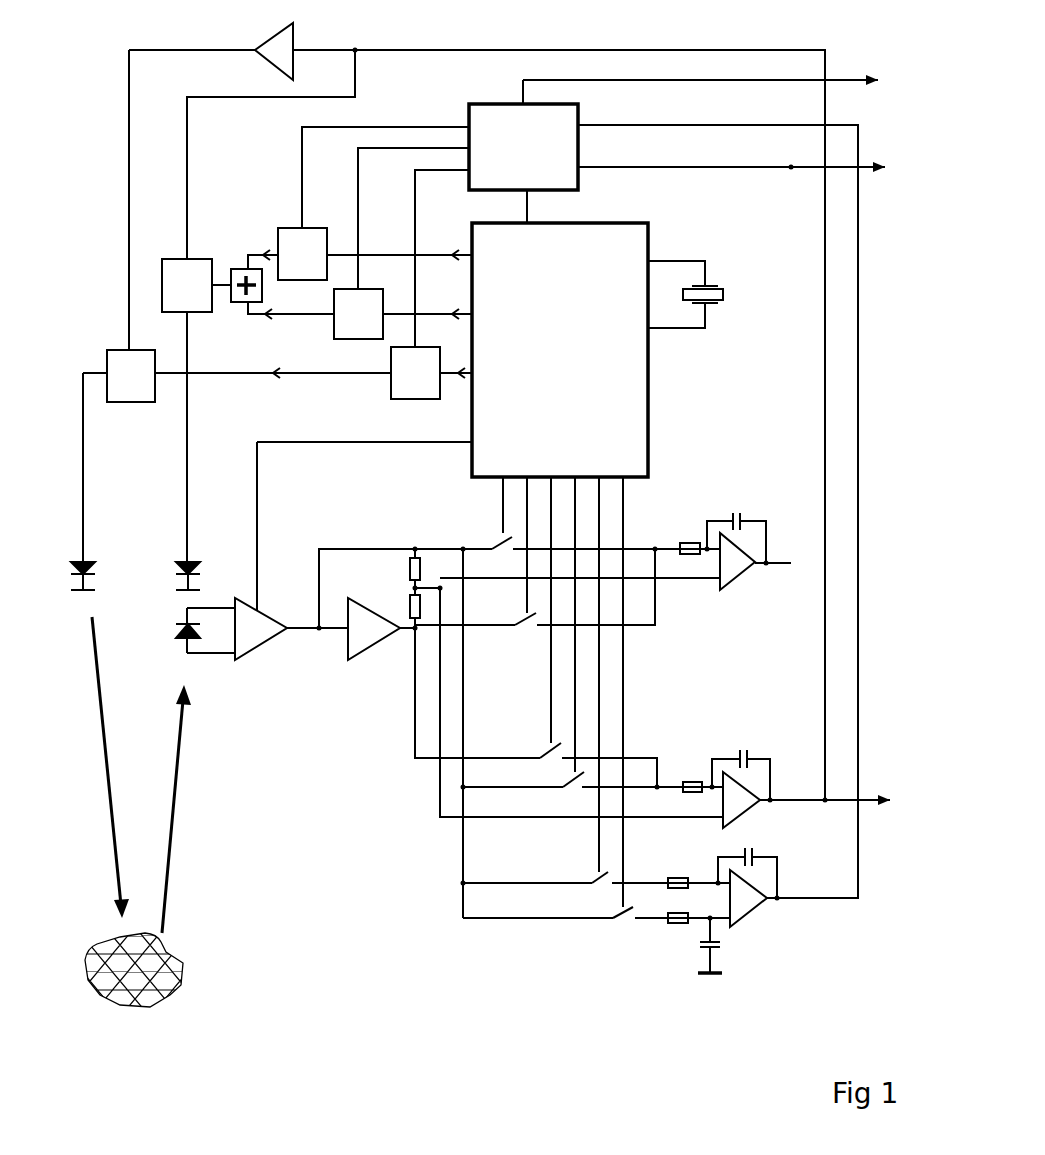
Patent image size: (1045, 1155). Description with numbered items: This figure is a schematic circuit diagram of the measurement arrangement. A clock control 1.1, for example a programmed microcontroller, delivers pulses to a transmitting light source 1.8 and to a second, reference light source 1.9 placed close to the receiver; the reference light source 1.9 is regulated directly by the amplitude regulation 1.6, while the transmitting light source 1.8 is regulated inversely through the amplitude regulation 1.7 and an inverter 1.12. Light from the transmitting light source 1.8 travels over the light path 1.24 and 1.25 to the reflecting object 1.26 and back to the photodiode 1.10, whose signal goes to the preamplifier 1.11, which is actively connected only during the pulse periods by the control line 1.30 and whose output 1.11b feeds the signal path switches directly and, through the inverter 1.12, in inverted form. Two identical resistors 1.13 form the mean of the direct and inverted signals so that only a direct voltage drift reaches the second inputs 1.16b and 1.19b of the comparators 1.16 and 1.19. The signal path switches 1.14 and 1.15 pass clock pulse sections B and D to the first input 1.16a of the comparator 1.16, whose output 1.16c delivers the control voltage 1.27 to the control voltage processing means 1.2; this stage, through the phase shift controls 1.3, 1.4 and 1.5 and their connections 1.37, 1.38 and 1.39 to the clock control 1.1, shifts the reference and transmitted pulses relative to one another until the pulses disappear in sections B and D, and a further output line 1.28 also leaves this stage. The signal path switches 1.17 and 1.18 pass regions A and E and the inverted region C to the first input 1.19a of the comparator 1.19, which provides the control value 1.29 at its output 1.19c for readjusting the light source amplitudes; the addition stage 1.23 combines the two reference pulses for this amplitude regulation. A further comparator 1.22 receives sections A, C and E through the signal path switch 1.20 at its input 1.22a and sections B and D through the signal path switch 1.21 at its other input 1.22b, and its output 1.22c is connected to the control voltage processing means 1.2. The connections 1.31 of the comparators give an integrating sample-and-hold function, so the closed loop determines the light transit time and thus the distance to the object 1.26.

The clock control 1.1 is at (560, 350).
The control voltage processing means 1.2 is at (523, 147).
The phase shift control 1.3 is at (287, 254).
The phase shift control 1.4 is at (315, 314).
The phase shift control 1.5 is at (415, 373).
The amplitude regulation 1.6 is at (187, 285).
The amplitude regulation 1.7 is at (131, 376).
The transmitting light source 1.8 is at (96, 555).
The second light source 1.9 is at (200, 555).
The photodiode 1.10 is at (200, 655).
The preamplifier 1.11 is at (266, 625).
The output of the amplifier 1.11b is at (287, 640).
The inverter 1.12 is at (295, 37).
The two identical resistors 1.13 is at (410, 598).
The signal path switch 1.14 is at (494, 546).
The signal path switch 1.15 is at (531, 626).
The comparator 1.16 is at (738, 576).
The first input 1.16a is at (717, 556).
The second input 1.16b is at (720, 590).
The output 1.16c is at (754, 564).
The signal path switch 1.17 is at (546, 756).
The signal path switch 1.18 is at (573, 795).
The comparator 1.19 is at (745, 803).
The first input 1.19a is at (736, 780).
The second input 1.19b is at (719, 815).
The output 1.19c is at (768, 803).
The signal path switch 1.20 is at (615, 878).
The signal path switch 1.21 is at (628, 924).
The further comparator 1.22 is at (748, 908).
The input 1.22a is at (723, 882).
The other input 1.22b is at (732, 925).
The output 1.22c is at (774, 903).
The addition stage 1.23 is at (238, 268).
The light path 1.24 is at (109, 740).
The light path 1.25 is at (184, 785).
The object 1.26 is at (159, 970).
The control voltage 1.27 is at (880, 168).
The output signal 1.28 is at (856, 74).
The control value 1.29 is at (885, 812).
The control line 1.30 is at (268, 448).
The integration connections 1.31 is at (690, 532).
The control line / capacitor 1.37 is at (365, 253).
The control line 1.38 is at (420, 312).
The control line 1.39 is at (472, 373).